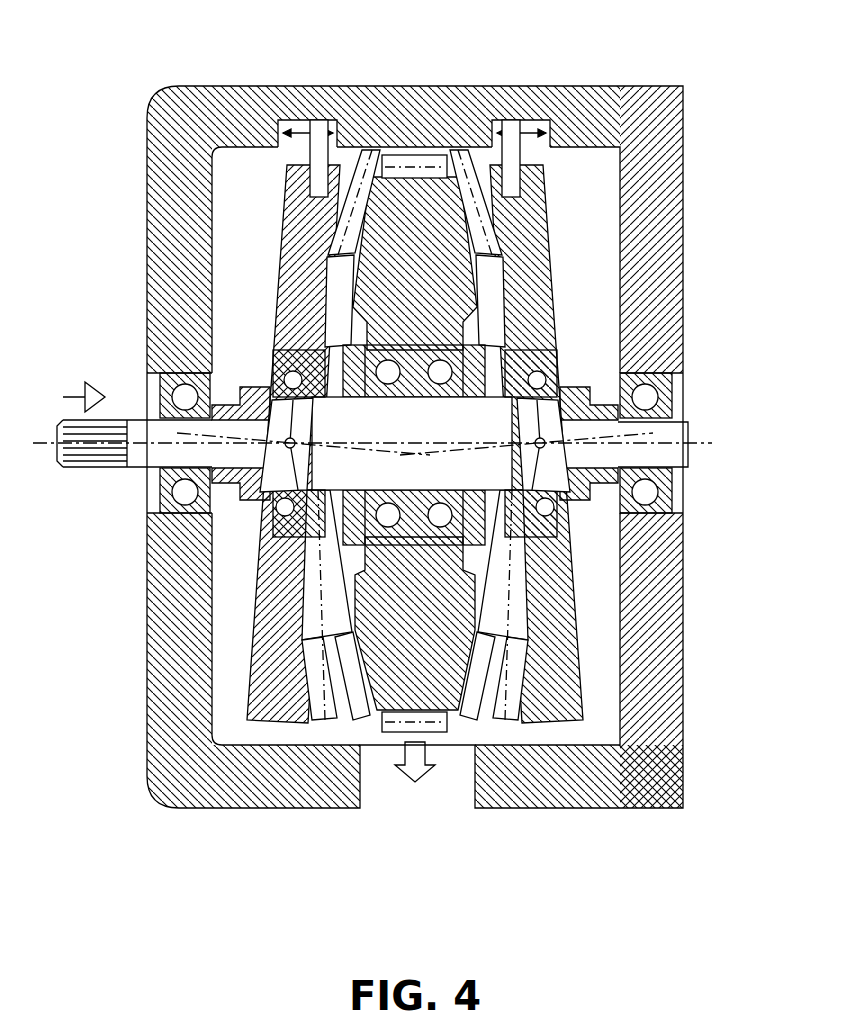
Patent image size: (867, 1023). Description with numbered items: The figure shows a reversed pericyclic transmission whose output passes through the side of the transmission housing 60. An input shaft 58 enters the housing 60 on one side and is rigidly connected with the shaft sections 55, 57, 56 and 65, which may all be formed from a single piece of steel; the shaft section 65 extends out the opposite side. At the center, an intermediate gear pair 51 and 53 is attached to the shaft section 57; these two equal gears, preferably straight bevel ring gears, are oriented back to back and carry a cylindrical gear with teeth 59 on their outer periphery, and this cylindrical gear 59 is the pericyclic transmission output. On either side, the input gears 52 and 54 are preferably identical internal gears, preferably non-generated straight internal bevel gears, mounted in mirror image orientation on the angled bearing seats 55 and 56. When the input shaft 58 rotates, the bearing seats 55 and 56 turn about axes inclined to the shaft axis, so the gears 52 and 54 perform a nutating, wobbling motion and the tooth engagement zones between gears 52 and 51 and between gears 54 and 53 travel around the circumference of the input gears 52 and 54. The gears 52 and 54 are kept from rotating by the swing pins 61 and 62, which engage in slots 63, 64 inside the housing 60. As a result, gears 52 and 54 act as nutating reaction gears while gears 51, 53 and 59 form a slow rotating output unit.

The intermediate gear 51 is at (397, 165).
The input gear 52 is at (287, 243).
The intermediate gear 53 is at (437, 195).
The input gear 54 is at (540, 230).
The angled bearing seat 55 is at (280, 465).
The angled bearing seat 56 is at (553, 470).
The shaft section 57 is at (325, 473).
The input shaft 58 is at (140, 455).
The cylindrical gear 59 is at (413, 163).
The transmission housing 60 is at (162, 243).
The swing pin 61 is at (295, 125).
The swing pin 62 is at (505, 125).
The slot 63 is at (287, 118).
The slot 64 is at (540, 120).
The shaft section 65 is at (675, 455).